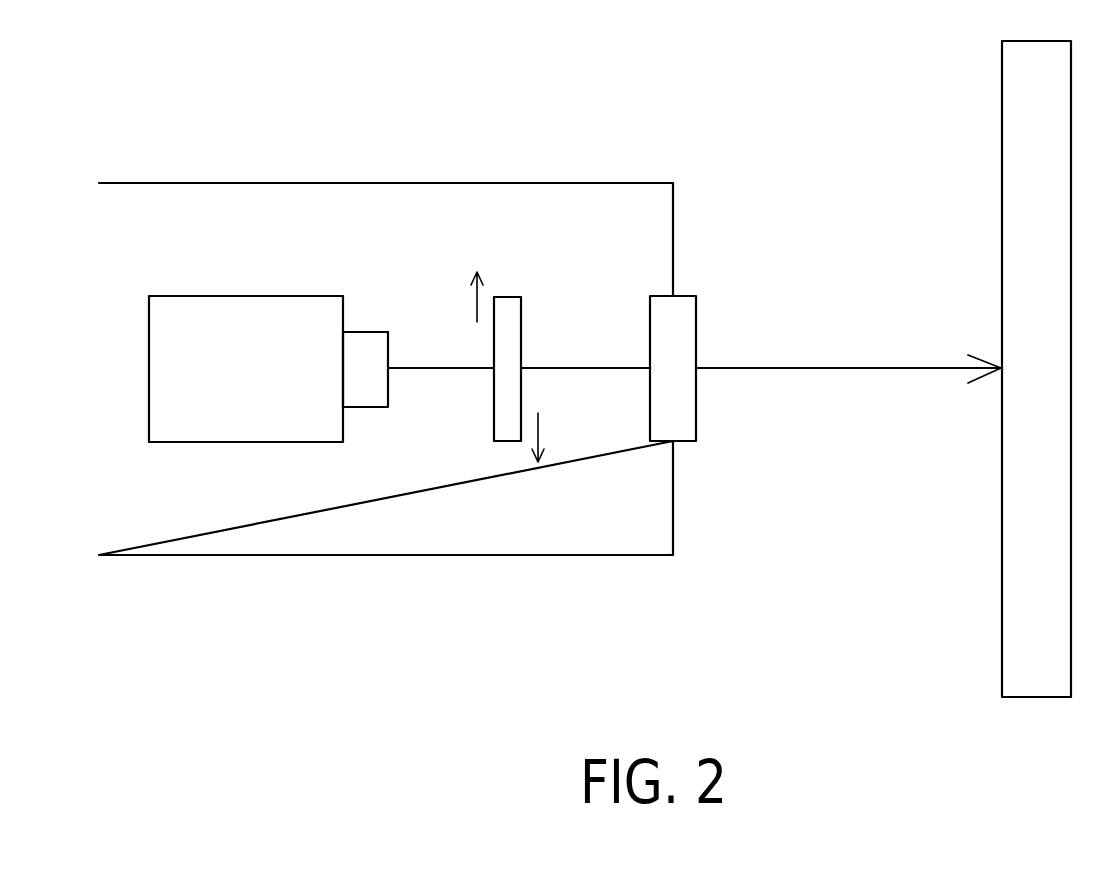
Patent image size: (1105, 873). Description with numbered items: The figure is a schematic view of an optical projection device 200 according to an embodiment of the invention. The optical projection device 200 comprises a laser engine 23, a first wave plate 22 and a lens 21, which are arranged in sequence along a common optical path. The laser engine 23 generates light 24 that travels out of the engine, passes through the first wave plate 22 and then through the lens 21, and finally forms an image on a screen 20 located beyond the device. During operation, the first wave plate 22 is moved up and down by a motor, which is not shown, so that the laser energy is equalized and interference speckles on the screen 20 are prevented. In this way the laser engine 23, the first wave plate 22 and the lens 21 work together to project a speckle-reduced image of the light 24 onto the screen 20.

The optical projection device 200 is at (125, 181).
The screen 20 is at (1025, 592).
The lens 21 is at (683, 422).
The first wave plate 22 is at (505, 432).
The laser engine 23 is at (247, 422).
The light 24 is at (430, 368).